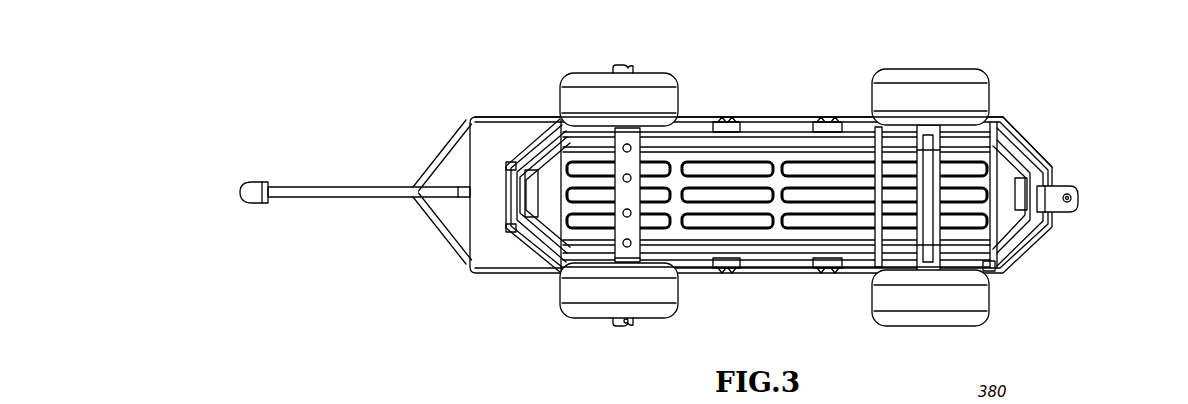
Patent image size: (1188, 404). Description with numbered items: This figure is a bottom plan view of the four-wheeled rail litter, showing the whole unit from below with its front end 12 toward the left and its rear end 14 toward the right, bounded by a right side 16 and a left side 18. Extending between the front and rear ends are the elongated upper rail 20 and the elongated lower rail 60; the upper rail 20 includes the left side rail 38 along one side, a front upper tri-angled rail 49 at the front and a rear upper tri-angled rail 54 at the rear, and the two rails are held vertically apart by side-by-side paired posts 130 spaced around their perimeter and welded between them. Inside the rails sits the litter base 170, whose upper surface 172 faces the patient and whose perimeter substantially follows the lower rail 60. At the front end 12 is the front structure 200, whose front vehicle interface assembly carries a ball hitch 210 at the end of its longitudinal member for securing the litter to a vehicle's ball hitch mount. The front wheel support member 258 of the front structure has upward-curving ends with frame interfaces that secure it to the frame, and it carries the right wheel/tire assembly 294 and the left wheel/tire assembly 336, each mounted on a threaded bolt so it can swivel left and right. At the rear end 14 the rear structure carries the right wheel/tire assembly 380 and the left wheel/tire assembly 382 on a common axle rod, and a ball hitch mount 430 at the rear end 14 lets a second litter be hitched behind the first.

The front end 12 is at (523, 243).
The rear end 14 is at (1048, 160).
The right side 16 is at (725, 122).
The left side 18 is at (807, 277).
The elongated upper rail 20 is at (813, 122).
The left side rail 38 is at (757, 273).
The front upper tri-angled rail 49 is at (508, 148).
The rear upper tri-angled rail 54 is at (1032, 168).
The elongated lower rail 60 is at (702, 122).
The side-by-side paired posts 130 is at (732, 173).
The litter base 170 is at (752, 122).
The upper surface 172 is at (703, 270).
The front structure 200 is at (381, 122).
The ball hitch 210 is at (238, 192).
The front wheel support member 258 is at (622, 197).
The right wheel/tire assembly 294 is at (590, 83).
The left wheel/tire assembly 336 is at (617, 323).
The right wheel/tire assembly 380 is at (962, 82).
The left wheel/tire assembly 382 is at (973, 307).
The ball hitch mount 430 is at (1075, 207).